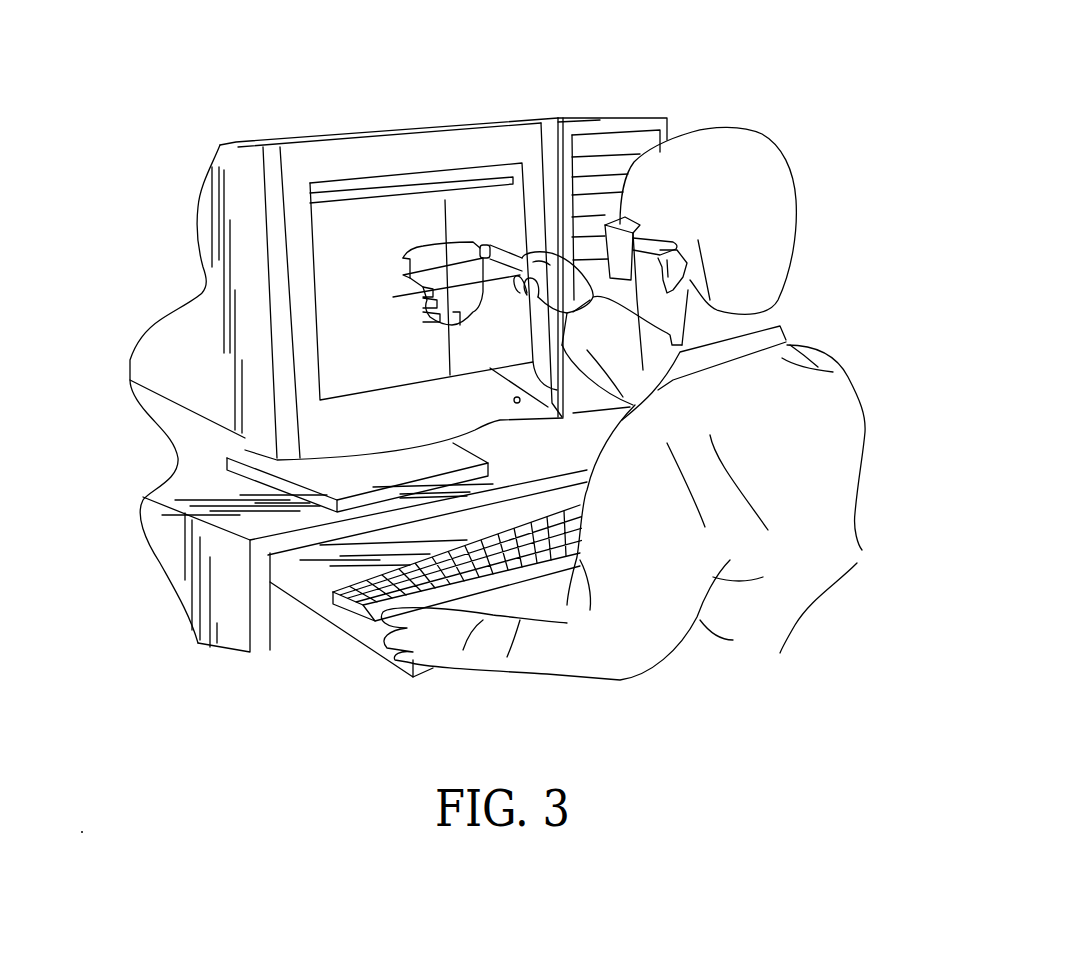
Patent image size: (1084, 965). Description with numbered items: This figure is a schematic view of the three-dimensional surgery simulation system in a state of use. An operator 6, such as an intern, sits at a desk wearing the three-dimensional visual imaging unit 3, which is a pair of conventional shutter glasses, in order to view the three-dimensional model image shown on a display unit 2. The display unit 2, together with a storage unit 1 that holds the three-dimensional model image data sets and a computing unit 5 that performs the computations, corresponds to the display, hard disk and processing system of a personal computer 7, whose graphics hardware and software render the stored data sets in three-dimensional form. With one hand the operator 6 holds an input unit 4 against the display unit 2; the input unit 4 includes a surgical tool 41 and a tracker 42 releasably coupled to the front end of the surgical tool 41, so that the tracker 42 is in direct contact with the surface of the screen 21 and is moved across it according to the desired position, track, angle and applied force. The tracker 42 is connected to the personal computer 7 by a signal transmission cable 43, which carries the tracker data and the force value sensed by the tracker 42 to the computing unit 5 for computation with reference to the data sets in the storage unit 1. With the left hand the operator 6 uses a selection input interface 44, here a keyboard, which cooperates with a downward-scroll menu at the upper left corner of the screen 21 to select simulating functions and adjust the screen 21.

The storage unit 1 is at (608, 172).
The display unit 2 is at (213, 168).
The screen 21 is at (352, 220).
The three-dimensional visual imaging unit 3 is at (626, 247).
The input unit 4 is at (518, 235).
The surgical tool 41 is at (508, 247).
The tracker 42 is at (482, 247).
The signal transmission cable 43 is at (507, 250).
The selection input interface 44 is at (355, 608).
The computing unit 5 is at (612, 170).
The operator 6 is at (792, 326).
The personal computer 7 is at (567, 112).